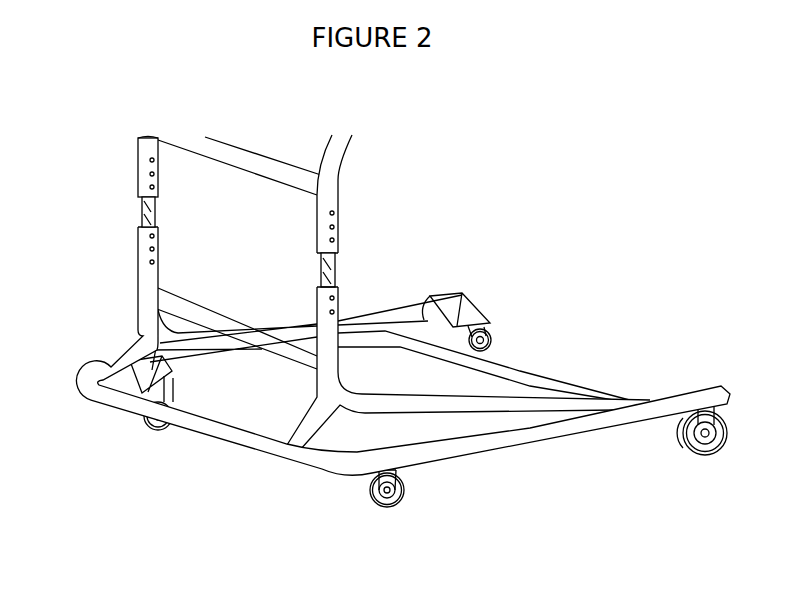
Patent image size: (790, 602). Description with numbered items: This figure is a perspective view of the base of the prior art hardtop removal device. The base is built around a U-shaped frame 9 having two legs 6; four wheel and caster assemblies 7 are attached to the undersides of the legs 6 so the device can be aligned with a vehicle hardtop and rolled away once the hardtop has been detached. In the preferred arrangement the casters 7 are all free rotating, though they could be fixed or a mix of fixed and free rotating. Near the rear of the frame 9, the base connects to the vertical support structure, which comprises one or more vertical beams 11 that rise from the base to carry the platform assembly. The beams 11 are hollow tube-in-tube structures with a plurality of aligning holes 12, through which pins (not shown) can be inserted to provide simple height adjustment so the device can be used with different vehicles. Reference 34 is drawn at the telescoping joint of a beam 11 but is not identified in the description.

The legs 6 is at (570, 437).
The wheel and caster assemblies 7 is at (362, 499).
The U-shaped frame 9 is at (212, 440).
The vertical beams 11 is at (338, 182).
The aligning holes 12 is at (338, 213).
The height adjustment joint 34 is at (120, 223).